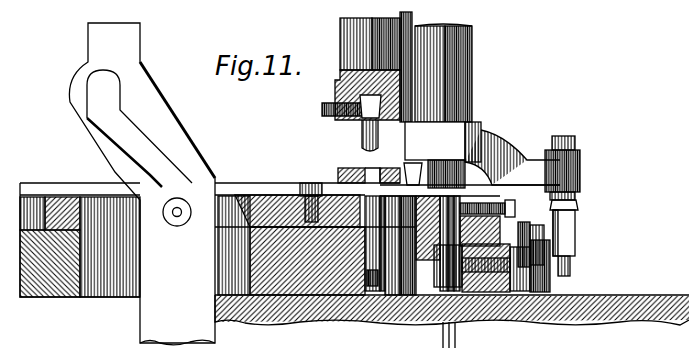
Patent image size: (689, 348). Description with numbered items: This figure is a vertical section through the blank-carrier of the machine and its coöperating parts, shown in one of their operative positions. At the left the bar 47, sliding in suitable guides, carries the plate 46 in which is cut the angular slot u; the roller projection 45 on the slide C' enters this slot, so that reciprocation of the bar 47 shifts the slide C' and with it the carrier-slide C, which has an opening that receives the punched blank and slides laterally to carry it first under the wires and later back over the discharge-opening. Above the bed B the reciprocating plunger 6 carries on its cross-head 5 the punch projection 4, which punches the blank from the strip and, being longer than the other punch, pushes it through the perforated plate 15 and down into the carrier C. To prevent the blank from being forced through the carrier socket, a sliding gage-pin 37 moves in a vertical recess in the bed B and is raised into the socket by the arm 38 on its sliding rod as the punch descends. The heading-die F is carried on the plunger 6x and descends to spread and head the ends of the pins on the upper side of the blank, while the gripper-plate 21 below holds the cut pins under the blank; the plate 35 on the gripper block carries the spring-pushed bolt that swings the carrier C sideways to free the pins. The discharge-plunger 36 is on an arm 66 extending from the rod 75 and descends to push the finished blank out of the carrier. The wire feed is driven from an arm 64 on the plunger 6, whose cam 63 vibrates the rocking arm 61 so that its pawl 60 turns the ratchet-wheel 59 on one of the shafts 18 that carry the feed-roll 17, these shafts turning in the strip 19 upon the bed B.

The bar 47 is at (92, 43).
The roller projection 45 is at (178, 226).
The plate 46 is at (177, 318).
The reciprocating plunger 6 is at (342, 31).
The rod 75 is at (413, 20).
The plunger 6x is at (472, 70).
The cross-head 5 is at (351, 106).
The projection 4 is at (361, 135).
The perforated plate 15 is at (346, 168).
The arm 66 is at (408, 166).
The plunger 36 is at (426, 162).
The arm 64 is at (510, 150).
The plate 35 is at (500, 190).
The gripper-plate 21 is at (495, 197).
The pawl 60 is at (536, 228).
The cam 63 is at (578, 211).
The rocking arm 61 is at (577, 239).
The ratchet-wheel 59 is at (572, 266).
The sliding gage-pin 37 is at (366, 248).
The arm 38 is at (368, 308).
The feed-roll 17 is at (458, 272).
The shafts 18 is at (490, 292).
The strip 19 is at (510, 300).
The bed B is at (292, 318).
The carrier-slide C is at (306, 190).
The slide C' is at (315, 227).
The heading-die F is at (470, 182).
The angular slot u is at (131, 141).
The guide U is at (400, 245).